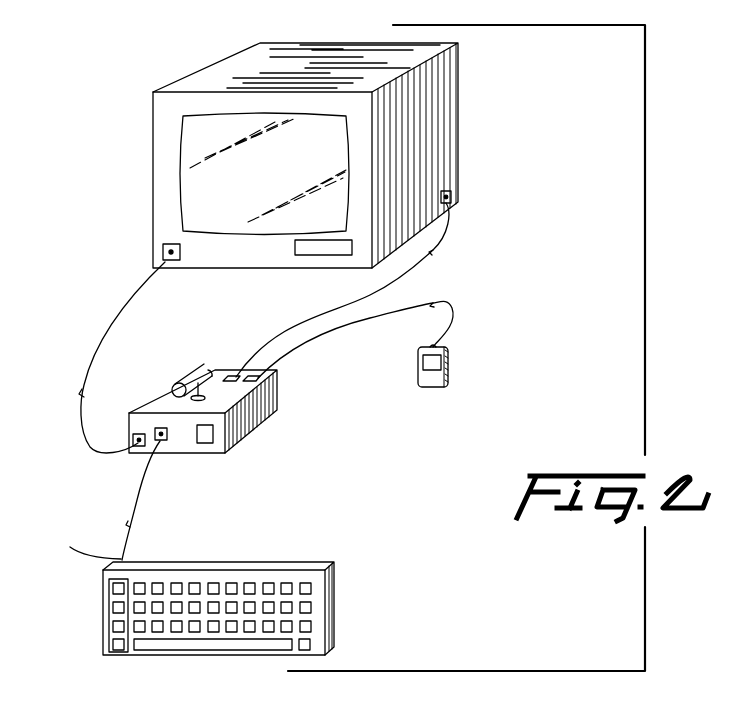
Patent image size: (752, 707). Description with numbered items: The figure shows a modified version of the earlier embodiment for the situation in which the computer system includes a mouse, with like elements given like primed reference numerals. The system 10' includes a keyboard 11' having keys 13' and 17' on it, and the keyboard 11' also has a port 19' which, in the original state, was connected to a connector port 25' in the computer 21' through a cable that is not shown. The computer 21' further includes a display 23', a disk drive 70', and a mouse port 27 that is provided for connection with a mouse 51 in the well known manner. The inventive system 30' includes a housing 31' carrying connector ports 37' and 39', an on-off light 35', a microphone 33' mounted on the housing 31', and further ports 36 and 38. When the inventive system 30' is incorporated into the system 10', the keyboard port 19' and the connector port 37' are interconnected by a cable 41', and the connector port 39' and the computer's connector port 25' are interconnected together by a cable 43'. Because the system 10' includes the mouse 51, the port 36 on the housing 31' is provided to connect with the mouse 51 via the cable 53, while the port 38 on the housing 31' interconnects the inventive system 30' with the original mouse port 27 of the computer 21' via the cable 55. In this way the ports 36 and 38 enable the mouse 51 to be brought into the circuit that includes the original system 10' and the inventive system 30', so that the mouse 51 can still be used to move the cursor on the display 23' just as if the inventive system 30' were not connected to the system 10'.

The system 10' is at (244, 350).
The computer 21' is at (341, 155).
The display 23' is at (211, 181).
The connector port 25' is at (138, 268).
The mouse port 27 is at (452, 197).
The disk drive 70' is at (306, 278).
The cable 55 is at (436, 251).
The cable 53 is at (437, 303).
The mouse 51 is at (449, 375).
The inventive system 30' is at (236, 428).
The housing 31' is at (236, 411).
The microphone 33' is at (192, 348).
The port 38 is at (236, 376).
The port 36 is at (259, 377).
The connector port 39' is at (114, 477).
The connector port 37' is at (182, 468).
The on-off light 35' is at (230, 467).
The cable 43' is at (102, 362).
The cable 41' is at (155, 500).
The port 19' is at (85, 542).
The keys 17' is at (229, 585).
The keyboard 11' is at (257, 608).
The keys 13' is at (87, 615).